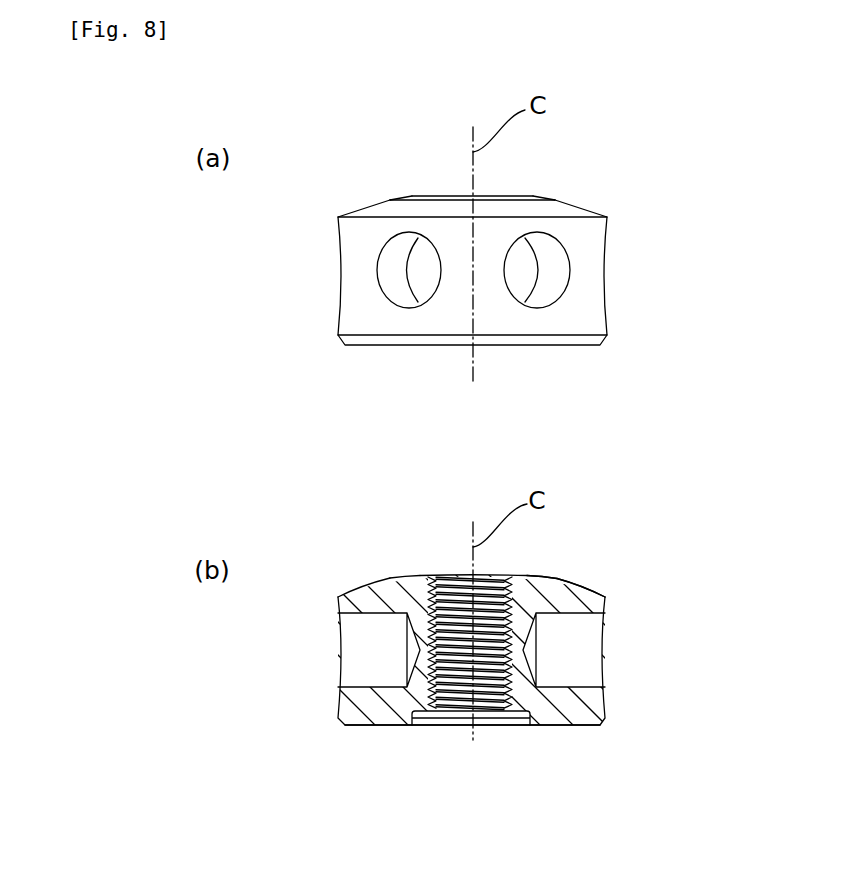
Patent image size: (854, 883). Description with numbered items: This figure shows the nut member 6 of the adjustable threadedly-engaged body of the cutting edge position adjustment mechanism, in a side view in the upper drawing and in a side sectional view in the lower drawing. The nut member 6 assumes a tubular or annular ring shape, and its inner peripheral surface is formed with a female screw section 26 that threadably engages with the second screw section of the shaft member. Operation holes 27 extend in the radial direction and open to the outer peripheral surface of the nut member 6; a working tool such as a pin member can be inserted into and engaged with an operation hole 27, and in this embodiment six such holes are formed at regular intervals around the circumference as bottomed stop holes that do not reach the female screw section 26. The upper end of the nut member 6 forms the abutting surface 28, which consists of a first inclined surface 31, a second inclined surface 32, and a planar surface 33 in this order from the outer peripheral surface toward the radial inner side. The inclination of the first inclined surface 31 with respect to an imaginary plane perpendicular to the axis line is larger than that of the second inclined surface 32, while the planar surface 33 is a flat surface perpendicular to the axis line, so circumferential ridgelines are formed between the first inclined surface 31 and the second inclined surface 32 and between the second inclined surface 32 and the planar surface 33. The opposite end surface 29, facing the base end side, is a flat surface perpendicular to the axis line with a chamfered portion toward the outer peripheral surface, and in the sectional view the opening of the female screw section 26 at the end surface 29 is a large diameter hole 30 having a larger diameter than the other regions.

The nut member 6 is at (632, 156).
The female screw section 26 is at (452, 580).
The operation hole 27 is at (390, 265).
The abutting surface 28 is at (566, 192).
The end surface 29 is at (537, 347).
The large diameter hole 30 is at (423, 726).
The first inclined surface 31 is at (357, 209).
The second inclined surface 32 is at (397, 198).
The planar surface 33 is at (424, 195).